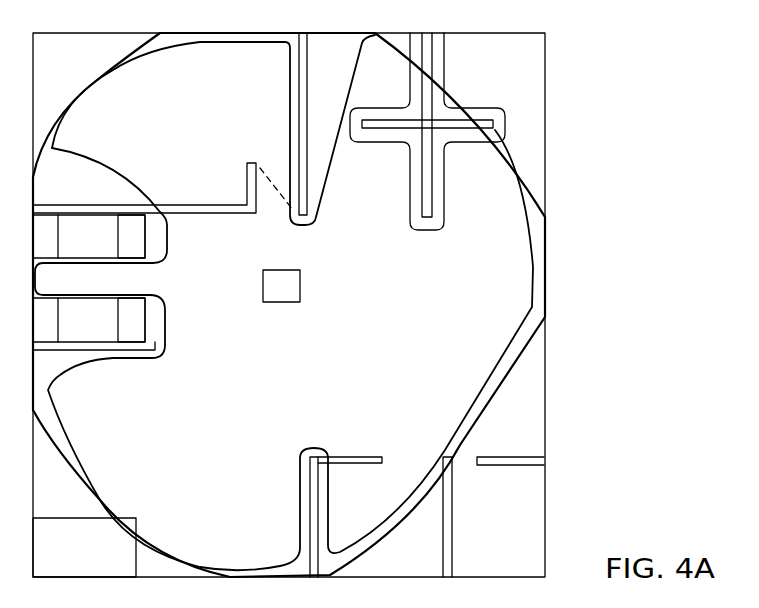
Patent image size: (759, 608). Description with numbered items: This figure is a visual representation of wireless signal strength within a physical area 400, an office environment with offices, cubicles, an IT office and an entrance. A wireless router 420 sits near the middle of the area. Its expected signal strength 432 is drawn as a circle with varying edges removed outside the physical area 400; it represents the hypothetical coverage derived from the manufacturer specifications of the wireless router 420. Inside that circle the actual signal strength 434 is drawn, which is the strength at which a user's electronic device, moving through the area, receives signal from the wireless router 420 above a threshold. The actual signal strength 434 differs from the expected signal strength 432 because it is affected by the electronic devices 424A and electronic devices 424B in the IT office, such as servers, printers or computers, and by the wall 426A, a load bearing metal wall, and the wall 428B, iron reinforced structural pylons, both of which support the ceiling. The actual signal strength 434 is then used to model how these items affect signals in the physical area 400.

The physical area 400 is at (577, 53).
The wireless router 420 is at (280, 302).
The electronic devices 424A is at (133, 320).
The electronic devices 424B is at (130, 240).
The wall 426A is at (315, 473).
The wall 428B is at (305, 203).
The expected signal strength 432 is at (493, 390).
The actual signal strength 434 is at (500, 365).